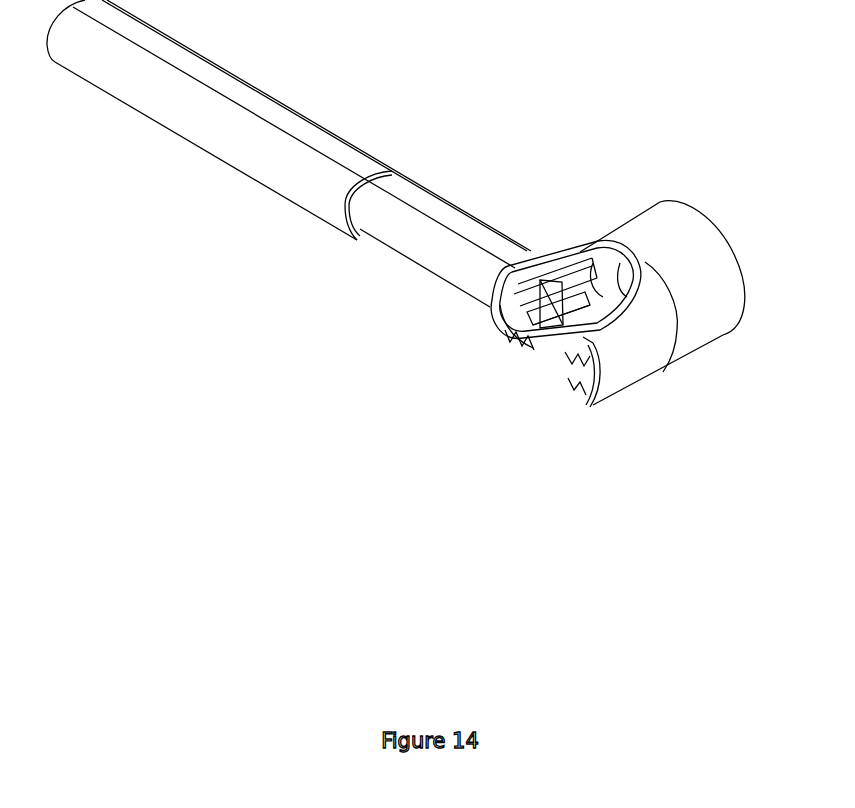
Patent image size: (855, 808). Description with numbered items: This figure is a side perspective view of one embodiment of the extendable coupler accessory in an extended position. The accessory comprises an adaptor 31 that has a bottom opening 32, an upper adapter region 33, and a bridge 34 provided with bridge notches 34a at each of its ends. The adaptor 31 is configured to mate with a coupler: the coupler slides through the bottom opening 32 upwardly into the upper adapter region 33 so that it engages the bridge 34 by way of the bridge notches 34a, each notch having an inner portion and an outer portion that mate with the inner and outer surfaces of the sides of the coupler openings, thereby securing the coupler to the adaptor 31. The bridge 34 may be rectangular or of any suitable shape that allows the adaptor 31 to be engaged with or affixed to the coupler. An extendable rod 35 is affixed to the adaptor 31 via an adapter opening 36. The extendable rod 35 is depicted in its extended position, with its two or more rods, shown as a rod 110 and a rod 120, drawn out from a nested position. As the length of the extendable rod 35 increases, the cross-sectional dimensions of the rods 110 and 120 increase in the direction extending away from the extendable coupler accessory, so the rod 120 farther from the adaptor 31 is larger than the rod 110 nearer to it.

The adaptor 31 is at (723, 335).
The bottom opening 32 is at (582, 316).
The upper adapter region 33 is at (617, 368).
The bridge 34 is at (555, 343).
The bridge notches 34a is at (520, 320).
The extendable rod 35 is at (250, 83).
The adapter opening 36 is at (530, 272).
The rod 110 is at (395, 235).
The rod 120 is at (180, 107).